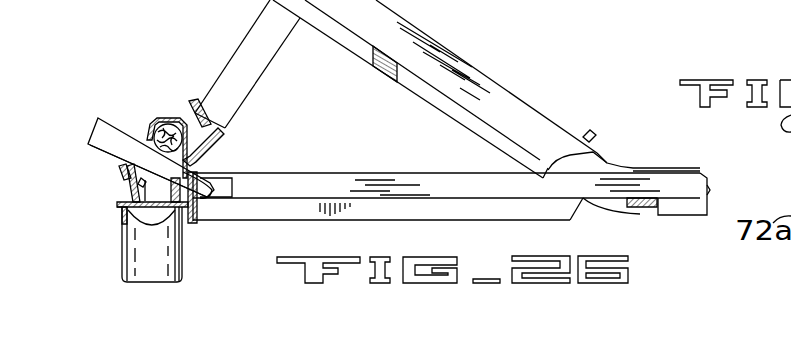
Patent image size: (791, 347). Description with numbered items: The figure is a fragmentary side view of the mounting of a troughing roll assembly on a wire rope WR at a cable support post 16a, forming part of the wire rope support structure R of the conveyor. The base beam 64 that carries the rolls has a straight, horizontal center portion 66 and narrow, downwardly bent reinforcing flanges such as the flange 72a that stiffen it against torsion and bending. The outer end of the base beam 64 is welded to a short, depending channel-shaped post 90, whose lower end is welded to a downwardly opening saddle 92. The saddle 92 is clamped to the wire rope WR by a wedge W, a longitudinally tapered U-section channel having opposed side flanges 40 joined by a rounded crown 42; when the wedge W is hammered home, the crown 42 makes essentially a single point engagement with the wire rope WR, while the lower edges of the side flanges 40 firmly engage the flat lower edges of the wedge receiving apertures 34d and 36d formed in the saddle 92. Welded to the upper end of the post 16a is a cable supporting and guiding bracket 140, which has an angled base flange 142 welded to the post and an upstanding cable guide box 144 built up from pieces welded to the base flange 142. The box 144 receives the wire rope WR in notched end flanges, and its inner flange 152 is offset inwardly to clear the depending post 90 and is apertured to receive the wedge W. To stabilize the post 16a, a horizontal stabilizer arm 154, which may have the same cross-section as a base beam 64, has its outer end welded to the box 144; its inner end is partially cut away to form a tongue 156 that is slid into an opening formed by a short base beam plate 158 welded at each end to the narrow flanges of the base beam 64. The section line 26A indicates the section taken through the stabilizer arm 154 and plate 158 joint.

The cable support post 16a is at (169, 247).
The section line 26A is at (707, 137).
The wedge receiving aperture 34d is at (133, 158).
The wedge receiving aperture 36d is at (222, 184).
The side flanges 40 is at (97, 122).
The crown 42 is at (124, 126).
The base beam 64 is at (468, 61).
The center portion 66 is at (699, 177).
The reinforcing flange 72a is at (368, 52).
The post 90 is at (262, 14).
The saddle 92 is at (213, 119).
The cable supporting and guiding bracket 140 is at (108, 194).
The base flange 142 is at (122, 208).
The cable guide box 144 is at (118, 173).
The inner flange 152 is at (222, 150).
The stabilizer arm 154 is at (470, 166).
The tongue 156 is at (603, 184).
The base beam plate 158 is at (643, 208).
The wedge W is at (100, 134).
The wire rope WR is at (175, 120).
The wire rope support structure R is at (108, 261).